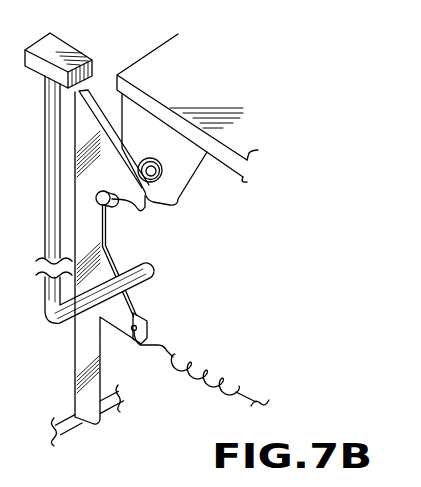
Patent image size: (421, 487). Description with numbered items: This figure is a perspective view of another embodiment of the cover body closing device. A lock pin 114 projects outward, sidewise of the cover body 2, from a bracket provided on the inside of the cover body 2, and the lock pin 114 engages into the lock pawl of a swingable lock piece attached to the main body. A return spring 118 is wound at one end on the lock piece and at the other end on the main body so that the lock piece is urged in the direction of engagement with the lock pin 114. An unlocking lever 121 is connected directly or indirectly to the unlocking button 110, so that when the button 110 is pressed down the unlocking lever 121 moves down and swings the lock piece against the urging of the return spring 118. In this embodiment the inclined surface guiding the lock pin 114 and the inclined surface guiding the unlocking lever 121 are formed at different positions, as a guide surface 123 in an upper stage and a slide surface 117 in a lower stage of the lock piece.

The cover body 2 is at (145, 64).
The unlocking button 110 is at (70, 50).
The lock pin 114 is at (117, 205).
The slide surface 117 is at (133, 297).
The return spring 118 is at (115, 258).
The unlocking lever 121 is at (152, 275).
The guide surface 123 is at (128, 151).